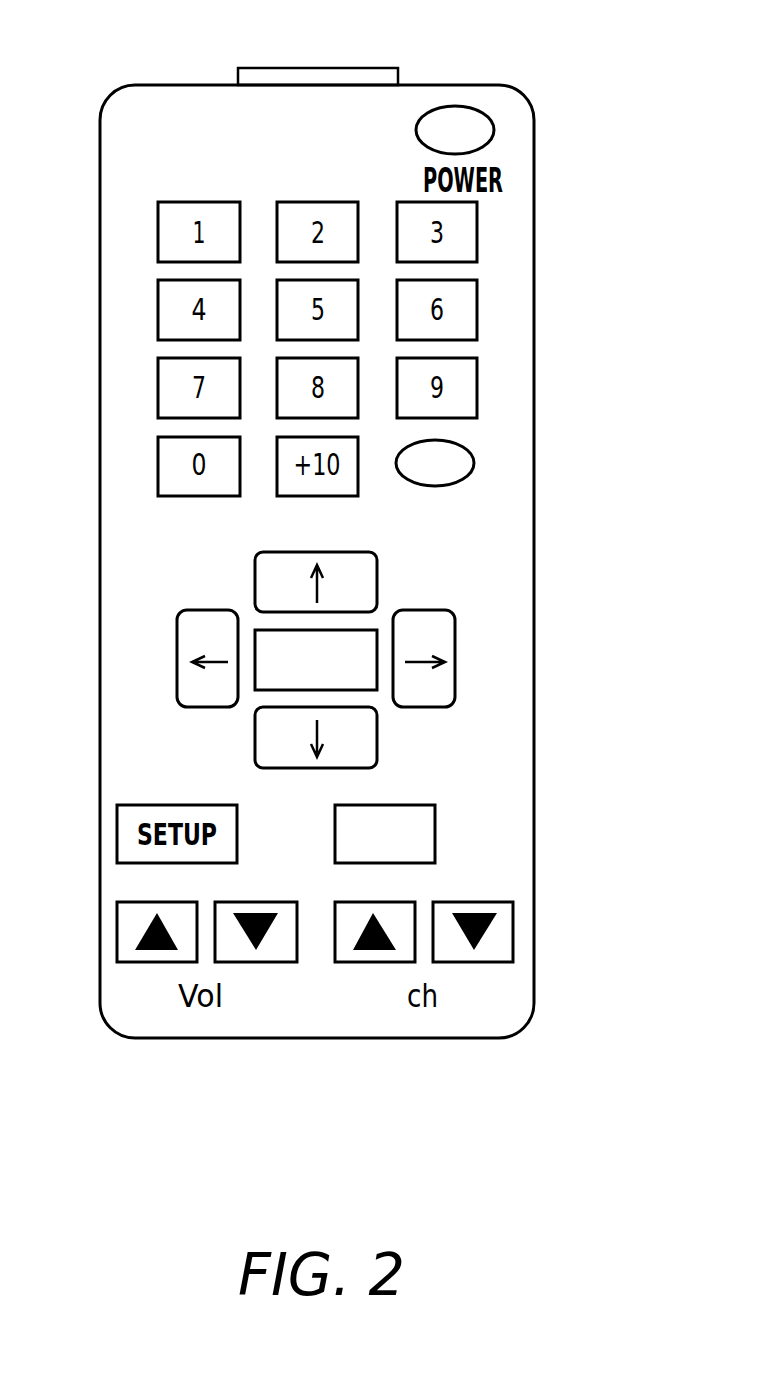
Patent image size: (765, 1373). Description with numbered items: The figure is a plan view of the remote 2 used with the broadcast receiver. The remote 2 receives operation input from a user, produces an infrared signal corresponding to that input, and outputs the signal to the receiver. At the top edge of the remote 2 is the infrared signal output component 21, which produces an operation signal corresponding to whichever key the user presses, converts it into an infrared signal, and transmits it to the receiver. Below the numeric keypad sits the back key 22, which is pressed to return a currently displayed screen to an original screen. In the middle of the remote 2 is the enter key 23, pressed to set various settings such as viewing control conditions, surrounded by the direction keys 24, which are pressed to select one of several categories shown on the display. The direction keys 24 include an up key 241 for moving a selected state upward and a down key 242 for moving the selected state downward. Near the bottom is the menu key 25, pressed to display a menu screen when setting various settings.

The remote 2 is at (505, 87).
The infrared signal output component 21 is at (315, 70).
The back key 22 is at (474, 463).
The enter key 23 is at (265, 630).
The direction keys 24 is at (389, 660).
The up key 241 is at (377, 581).
The down key 242 is at (377, 740).
The menu key 25 is at (435, 833).